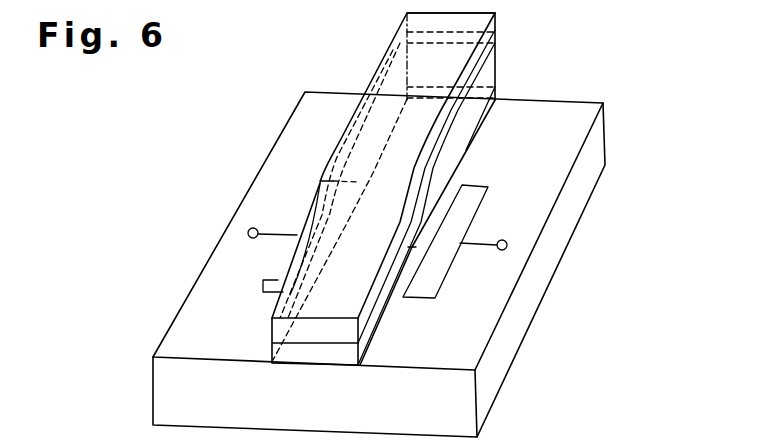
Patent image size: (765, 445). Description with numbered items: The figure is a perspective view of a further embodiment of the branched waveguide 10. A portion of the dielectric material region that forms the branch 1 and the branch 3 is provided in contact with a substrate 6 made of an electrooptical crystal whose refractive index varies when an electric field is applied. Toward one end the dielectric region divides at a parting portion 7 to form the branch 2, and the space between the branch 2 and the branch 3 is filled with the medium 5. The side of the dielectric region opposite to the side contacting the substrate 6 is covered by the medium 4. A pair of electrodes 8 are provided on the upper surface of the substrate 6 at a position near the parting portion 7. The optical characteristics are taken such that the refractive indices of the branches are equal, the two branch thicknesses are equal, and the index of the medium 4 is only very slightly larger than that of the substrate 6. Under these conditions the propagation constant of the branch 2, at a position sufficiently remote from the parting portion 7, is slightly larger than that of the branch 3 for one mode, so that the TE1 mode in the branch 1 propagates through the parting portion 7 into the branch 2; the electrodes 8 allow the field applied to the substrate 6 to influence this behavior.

The branch 1 is at (380, 323).
The branch 2 is at (480, 68).
The branch 3 is at (485, 118).
The medium 4 is at (392, 53).
The medium 5 is at (452, 147).
The substrate 6 is at (522, 323).
The parting portion 7 is at (412, 247).
The electrodes 8 is at (472, 209).
The branched waveguide 10 is at (236, 162).